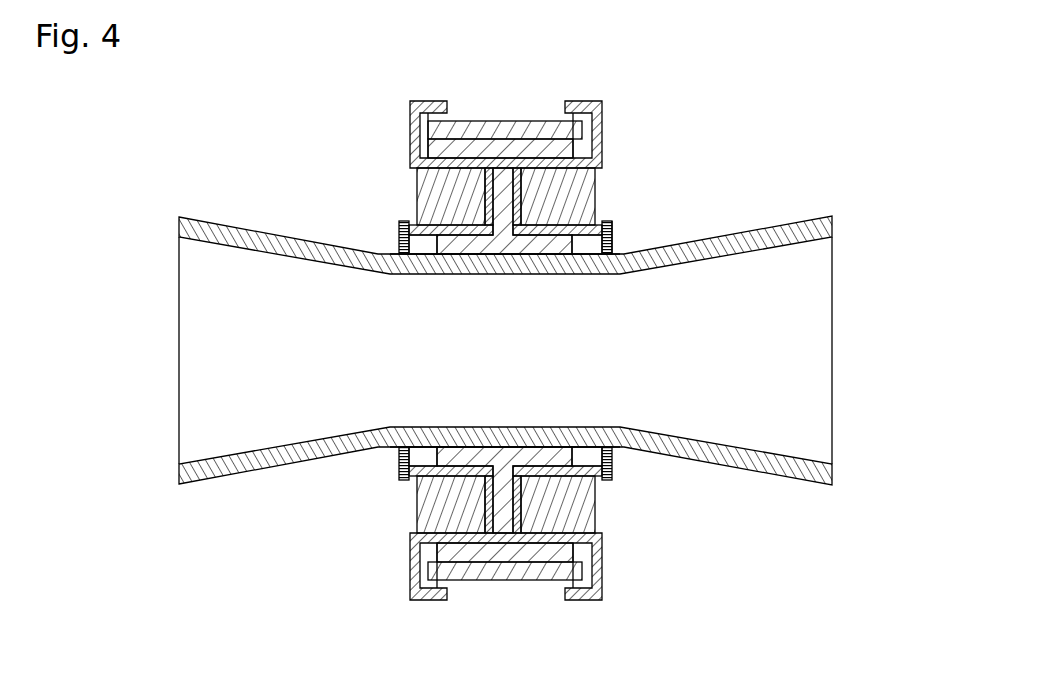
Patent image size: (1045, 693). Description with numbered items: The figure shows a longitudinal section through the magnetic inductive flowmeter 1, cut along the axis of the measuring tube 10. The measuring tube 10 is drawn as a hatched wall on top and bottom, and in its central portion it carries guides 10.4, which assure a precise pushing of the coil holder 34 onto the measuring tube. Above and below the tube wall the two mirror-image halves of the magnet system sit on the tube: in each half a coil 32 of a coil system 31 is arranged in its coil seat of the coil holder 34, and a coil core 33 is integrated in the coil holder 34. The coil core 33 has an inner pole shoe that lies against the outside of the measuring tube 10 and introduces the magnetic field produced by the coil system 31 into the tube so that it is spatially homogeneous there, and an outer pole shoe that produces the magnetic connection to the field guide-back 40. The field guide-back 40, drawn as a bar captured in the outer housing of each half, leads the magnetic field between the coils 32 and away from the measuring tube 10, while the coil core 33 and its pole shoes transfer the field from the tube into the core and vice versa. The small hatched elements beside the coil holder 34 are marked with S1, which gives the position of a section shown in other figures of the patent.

The flowmeter 1 is at (723, 525).
The measuring tube 10 is at (832, 483).
The guides 10.4 is at (398, 450).
The coil system 31 is at (616, 181).
The coil 32 is at (424, 203).
The coil core 33 is at (460, 243).
The coil holder 34 is at (417, 158).
The field guide-back 40 is at (543, 127).
The position of a section S1 is at (620, 232).